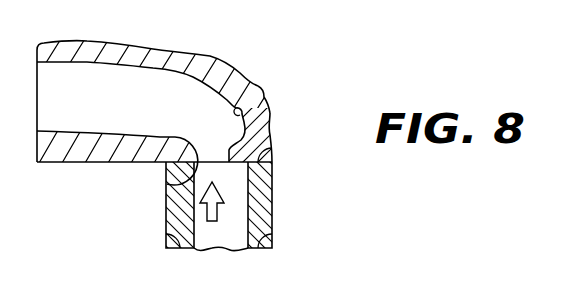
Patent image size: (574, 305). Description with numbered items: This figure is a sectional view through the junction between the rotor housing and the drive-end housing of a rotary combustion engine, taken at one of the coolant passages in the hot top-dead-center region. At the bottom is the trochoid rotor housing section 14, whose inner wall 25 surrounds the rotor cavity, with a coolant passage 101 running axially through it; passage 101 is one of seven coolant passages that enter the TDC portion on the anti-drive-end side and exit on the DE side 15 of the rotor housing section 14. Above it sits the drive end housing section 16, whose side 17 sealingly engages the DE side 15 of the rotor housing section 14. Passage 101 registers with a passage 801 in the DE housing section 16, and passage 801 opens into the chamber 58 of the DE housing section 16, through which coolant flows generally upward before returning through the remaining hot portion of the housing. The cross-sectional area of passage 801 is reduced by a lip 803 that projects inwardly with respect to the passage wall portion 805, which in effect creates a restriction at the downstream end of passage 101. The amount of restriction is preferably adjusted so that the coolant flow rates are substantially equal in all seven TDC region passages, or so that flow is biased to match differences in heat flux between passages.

The trochoid rotor housing section 14 is at (274, 219).
The DE side of rotor housing 15 is at (273, 146).
The drive end (DE) housing section 16 is at (190, 51).
The side of DE housing 17 is at (83, 163).
The inner wall 25 is at (166, 216).
The chamber 58 is at (108, 102).
The coolant passage 101 is at (231, 240).
The passage 801 is at (167, 184).
The lip 803 is at (229, 148).
The passage wall portion 805 is at (258, 96).